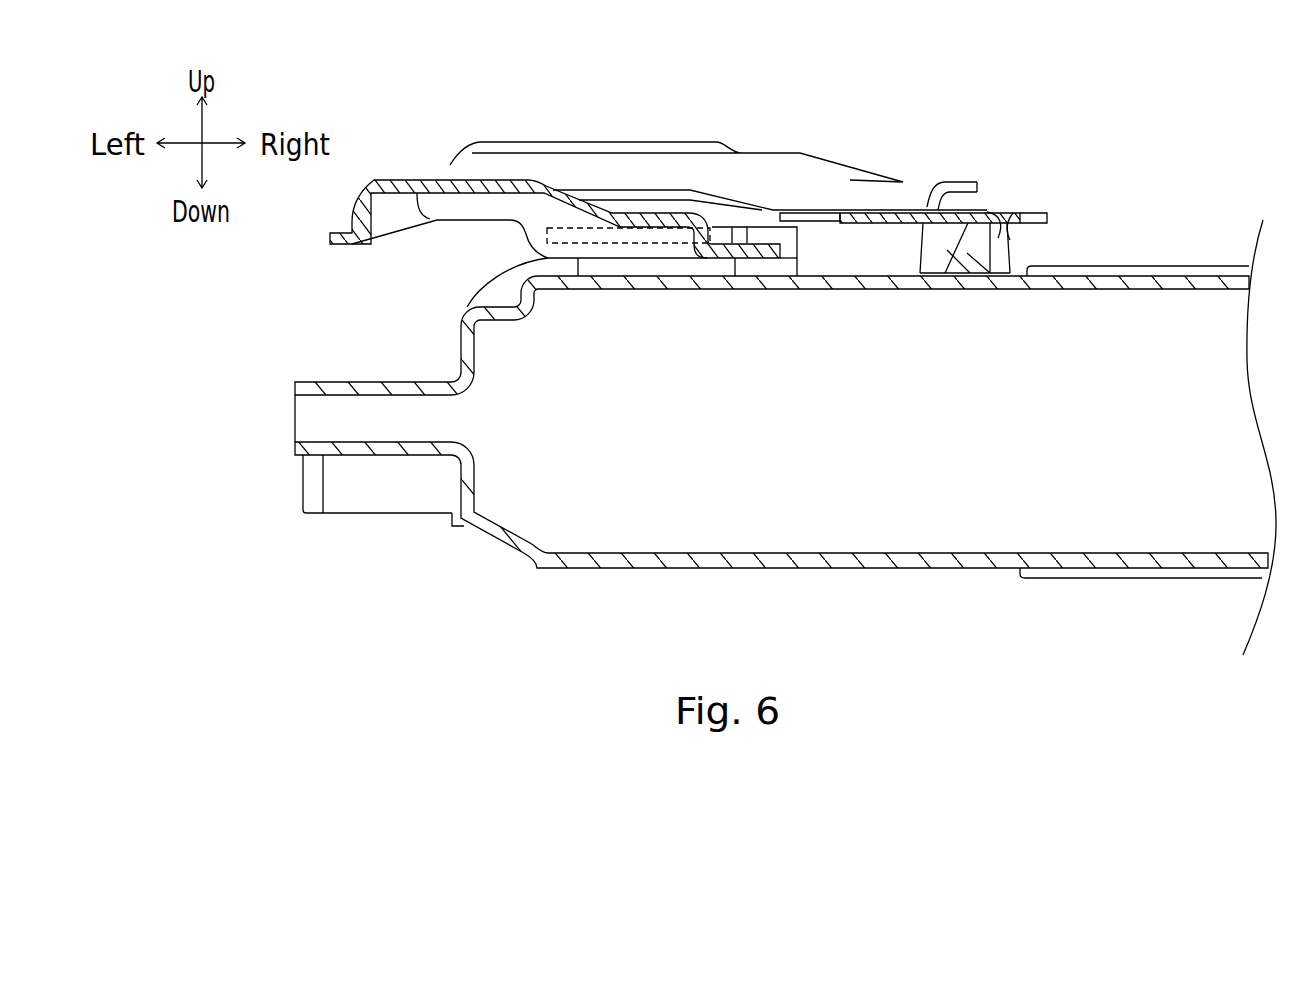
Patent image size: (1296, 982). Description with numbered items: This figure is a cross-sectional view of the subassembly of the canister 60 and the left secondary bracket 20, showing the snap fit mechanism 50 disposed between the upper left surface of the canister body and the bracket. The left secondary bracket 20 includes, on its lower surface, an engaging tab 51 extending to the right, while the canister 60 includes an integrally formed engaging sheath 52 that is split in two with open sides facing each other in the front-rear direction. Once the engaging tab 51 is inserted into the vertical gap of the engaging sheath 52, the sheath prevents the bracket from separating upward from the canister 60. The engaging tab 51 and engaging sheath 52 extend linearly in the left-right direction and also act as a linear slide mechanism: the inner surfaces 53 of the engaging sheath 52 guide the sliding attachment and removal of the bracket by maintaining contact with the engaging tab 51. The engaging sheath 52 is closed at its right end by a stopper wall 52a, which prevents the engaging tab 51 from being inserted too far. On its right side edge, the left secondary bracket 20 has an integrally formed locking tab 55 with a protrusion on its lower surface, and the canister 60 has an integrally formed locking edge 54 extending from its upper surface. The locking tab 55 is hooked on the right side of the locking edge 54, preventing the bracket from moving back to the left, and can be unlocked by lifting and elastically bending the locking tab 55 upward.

The left secondary bracket 20 is at (392, 180).
The snap fit mechanism 50 is at (1020, 183).
The engaging tab 51 is at (747, 253).
The engaging sheath 52 is at (763, 237).
The stopper wall 52a is at (797, 257).
The inner surfaces of the engaging sheath 53 is at (650, 268).
The locking edge 54 is at (985, 252).
The locking tab 55 is at (998, 228).
The canister 60 is at (826, 572).